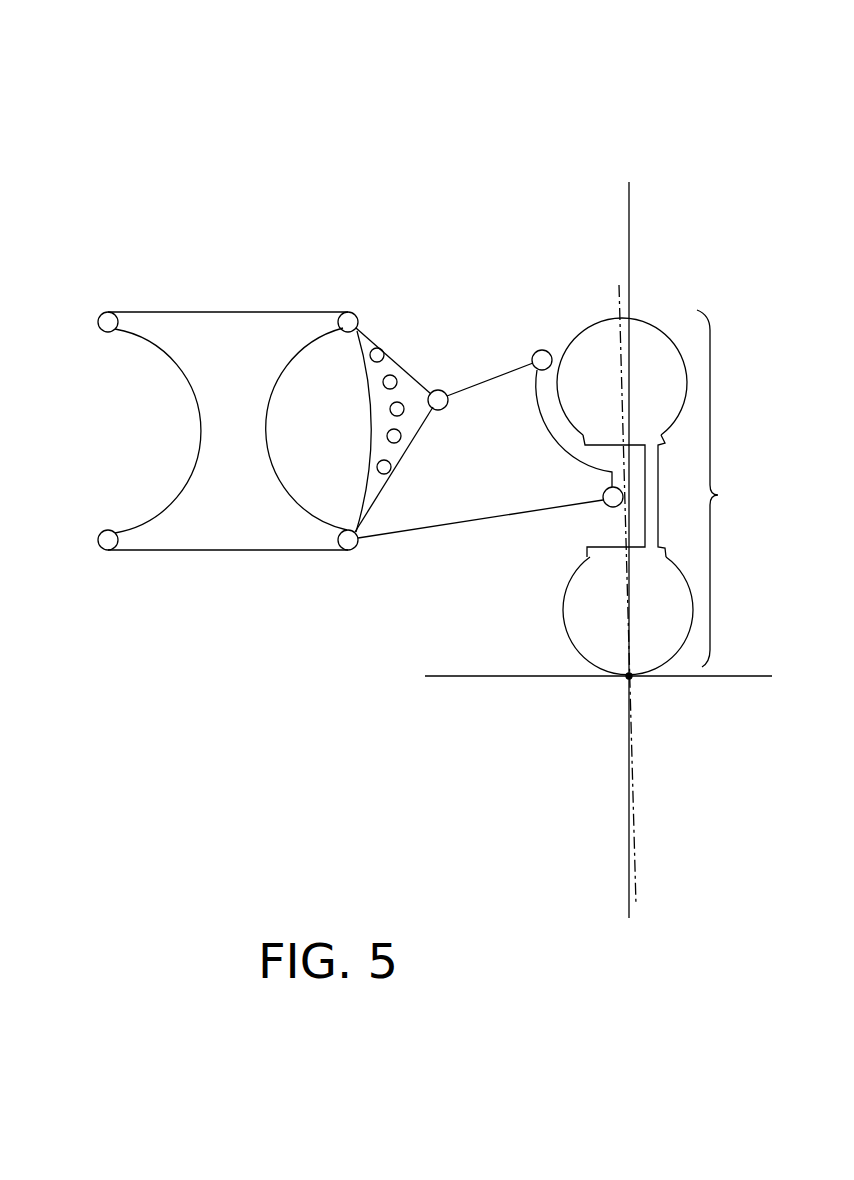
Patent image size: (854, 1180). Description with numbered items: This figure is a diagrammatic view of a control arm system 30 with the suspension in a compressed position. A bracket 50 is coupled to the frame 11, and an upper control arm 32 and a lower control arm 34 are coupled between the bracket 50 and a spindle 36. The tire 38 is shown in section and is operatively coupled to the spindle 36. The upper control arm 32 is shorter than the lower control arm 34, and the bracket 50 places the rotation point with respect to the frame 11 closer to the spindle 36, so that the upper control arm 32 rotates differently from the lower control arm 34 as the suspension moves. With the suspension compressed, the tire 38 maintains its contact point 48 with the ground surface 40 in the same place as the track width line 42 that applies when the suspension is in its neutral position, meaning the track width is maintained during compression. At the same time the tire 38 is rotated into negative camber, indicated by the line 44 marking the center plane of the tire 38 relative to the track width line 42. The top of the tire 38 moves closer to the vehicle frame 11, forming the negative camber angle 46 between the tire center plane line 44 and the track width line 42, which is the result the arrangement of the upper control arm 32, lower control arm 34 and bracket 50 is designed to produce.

The control arm system 30 is at (475, 178).
The frame 11 is at (223, 340).
The bracket 50 is at (393, 358).
The upper control arm 32 is at (473, 380).
The spindle 36 is at (572, 459).
The lower control arm 34 is at (463, 523).
The tire 38 is at (658, 492).
The line marking a center plane of the tire 44 is at (620, 357).
The track width line 42 is at (632, 187).
The negative camber angle 46 is at (588, 302).
The ground surface 40 is at (493, 677).
The contact point 48 is at (632, 680).